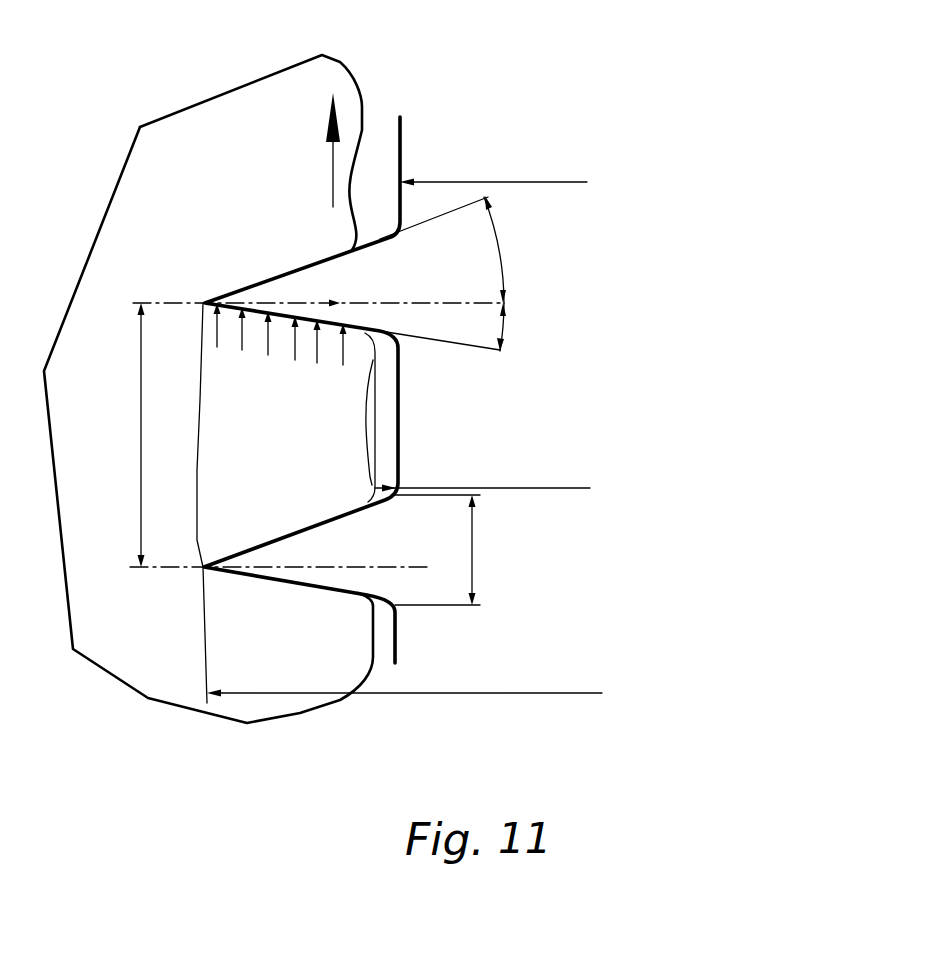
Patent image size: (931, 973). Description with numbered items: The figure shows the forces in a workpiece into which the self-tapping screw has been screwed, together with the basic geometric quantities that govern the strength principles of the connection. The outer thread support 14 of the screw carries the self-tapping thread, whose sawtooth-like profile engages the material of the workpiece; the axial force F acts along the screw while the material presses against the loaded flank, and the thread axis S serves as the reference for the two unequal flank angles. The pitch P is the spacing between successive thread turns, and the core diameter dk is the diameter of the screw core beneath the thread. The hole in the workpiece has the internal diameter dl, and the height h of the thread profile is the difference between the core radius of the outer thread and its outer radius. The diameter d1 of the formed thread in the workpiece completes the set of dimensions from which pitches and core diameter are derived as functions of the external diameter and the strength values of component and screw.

The outer thread support 14 is at (400, 137).
The axial force F is at (323, 146).
The thread axis / direction S is at (318, 289).
The pitch of a thread P is at (126, 435).
The core diameter of the screw dk is at (493, 162).
The internal diameter of the hole dl is at (482, 471).
The nut thread diameter d1 is at (404, 676).
The height of the thread profile h is at (437, 550).